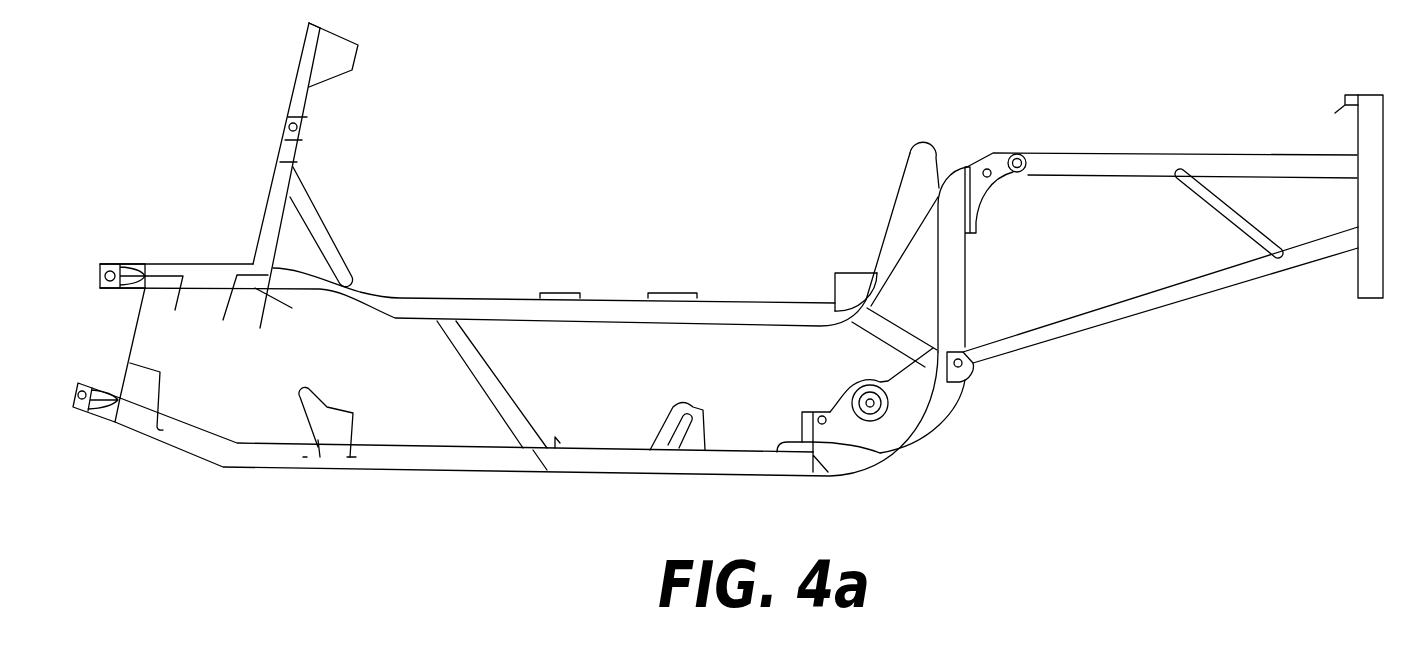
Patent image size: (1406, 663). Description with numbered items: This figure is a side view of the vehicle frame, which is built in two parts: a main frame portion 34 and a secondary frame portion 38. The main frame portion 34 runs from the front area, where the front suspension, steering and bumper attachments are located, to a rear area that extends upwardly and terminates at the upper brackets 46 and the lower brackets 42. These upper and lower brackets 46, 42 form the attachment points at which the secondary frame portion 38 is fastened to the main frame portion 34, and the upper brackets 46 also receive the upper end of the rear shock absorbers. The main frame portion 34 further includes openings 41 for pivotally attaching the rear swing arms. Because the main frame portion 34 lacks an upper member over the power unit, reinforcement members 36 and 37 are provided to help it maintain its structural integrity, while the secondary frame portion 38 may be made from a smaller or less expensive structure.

The main frame portion 34 is at (393, 302).
The reinforcement member 36 is at (512, 407).
The reinforcement member 37 is at (307, 210).
The secondary frame portion 38 is at (1100, 163).
The opening 41 is at (870, 403).
The lower bracket 42 is at (960, 375).
The upper bracket 46 is at (1000, 167).